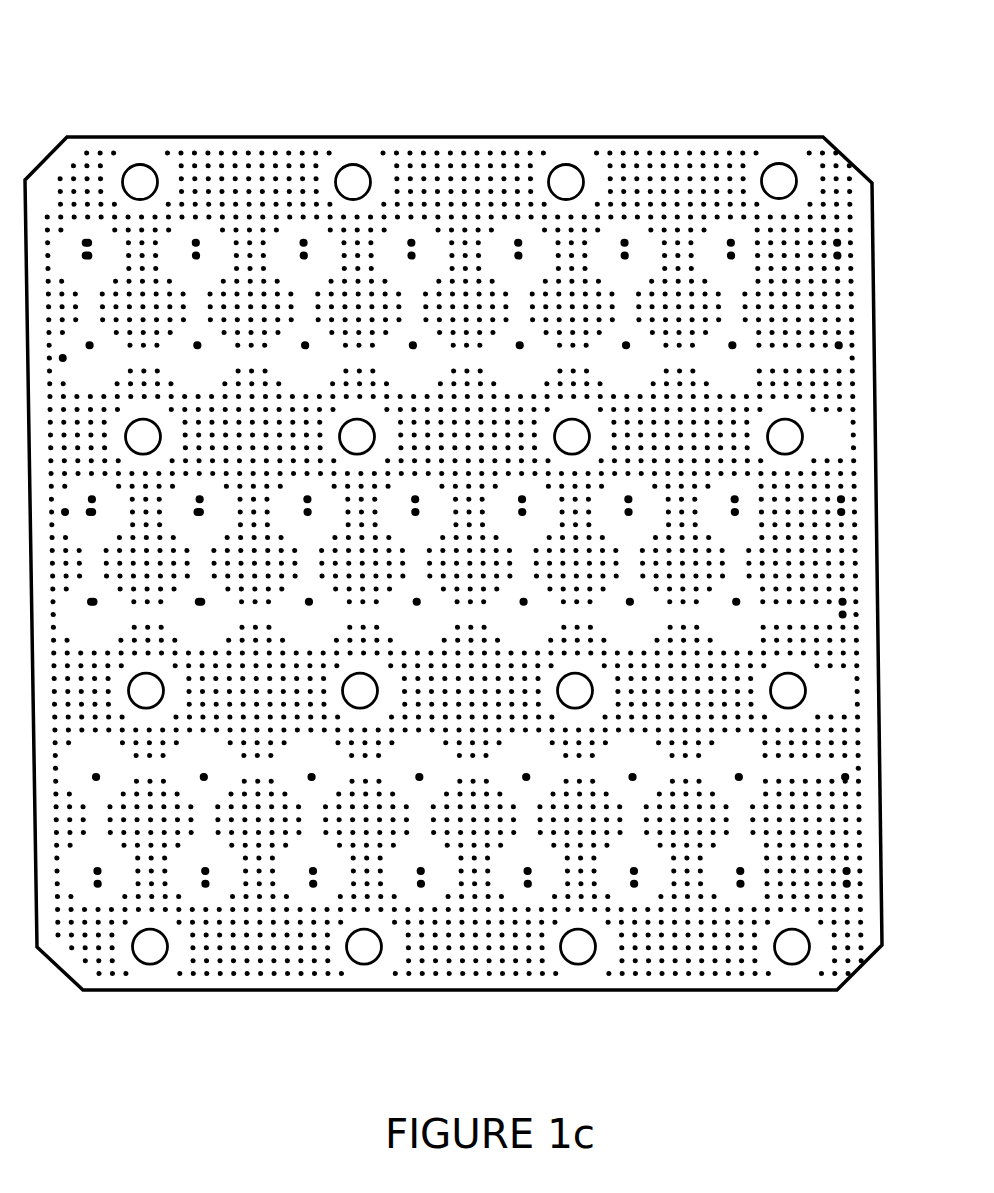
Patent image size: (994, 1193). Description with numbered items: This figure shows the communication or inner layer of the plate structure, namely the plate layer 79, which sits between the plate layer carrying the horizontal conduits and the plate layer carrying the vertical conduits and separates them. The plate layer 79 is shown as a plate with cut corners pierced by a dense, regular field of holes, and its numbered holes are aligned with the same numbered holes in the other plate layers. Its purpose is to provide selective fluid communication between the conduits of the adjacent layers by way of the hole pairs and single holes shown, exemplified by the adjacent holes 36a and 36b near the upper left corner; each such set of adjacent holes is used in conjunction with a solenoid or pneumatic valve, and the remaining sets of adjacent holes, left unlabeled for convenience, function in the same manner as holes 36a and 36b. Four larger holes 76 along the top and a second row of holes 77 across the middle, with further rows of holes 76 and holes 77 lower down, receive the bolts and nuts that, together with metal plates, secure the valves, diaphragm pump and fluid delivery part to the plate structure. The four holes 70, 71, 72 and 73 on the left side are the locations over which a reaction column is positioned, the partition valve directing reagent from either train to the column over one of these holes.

The plate layer 79 is at (768, 69).
The holes 76 is at (128, 168).
The holes 77 is at (151, 438).
The hole 36a is at (84, 243).
The hole 36b is at (84, 254).
The hole 70 is at (200, 513).
The hole 71 is at (92, 513).
The hole 72 is at (204, 606).
The hole 73 is at (95, 606).